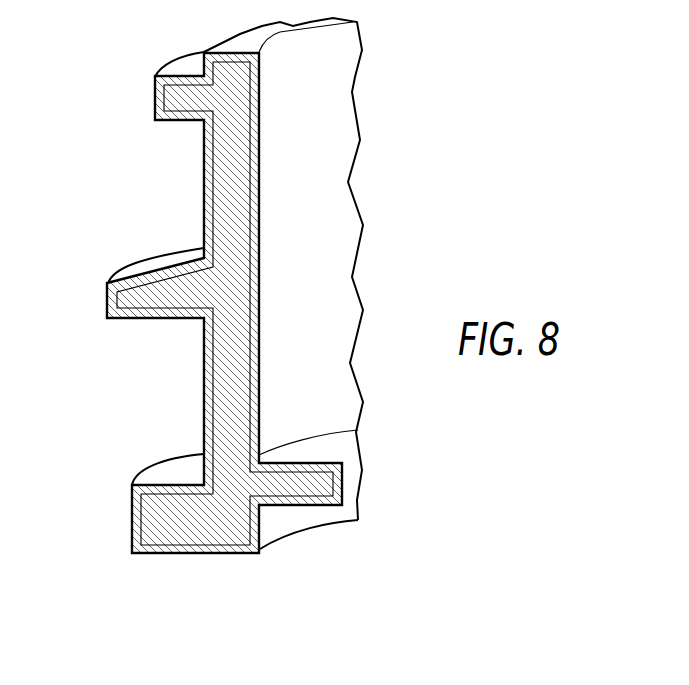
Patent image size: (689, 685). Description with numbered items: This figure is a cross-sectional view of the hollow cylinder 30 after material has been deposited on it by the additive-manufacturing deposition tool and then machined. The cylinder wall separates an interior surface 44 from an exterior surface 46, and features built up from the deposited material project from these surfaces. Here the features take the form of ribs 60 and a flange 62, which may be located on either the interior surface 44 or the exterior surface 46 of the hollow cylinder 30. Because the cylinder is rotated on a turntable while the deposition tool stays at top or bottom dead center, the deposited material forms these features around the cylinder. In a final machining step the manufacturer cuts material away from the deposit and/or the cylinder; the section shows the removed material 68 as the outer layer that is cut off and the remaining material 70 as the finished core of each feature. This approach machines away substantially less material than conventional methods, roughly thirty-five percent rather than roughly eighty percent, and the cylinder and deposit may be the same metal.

The hollow cylinder 30 is at (344, 300).
The interior surface 44 is at (260, 190).
The exterior surface 46 is at (204, 230).
The rib 60 is at (155, 97).
The flange 62 is at (132, 508).
The removed material 68 is at (204, 378).
The remaining material 70 is at (214, 415).